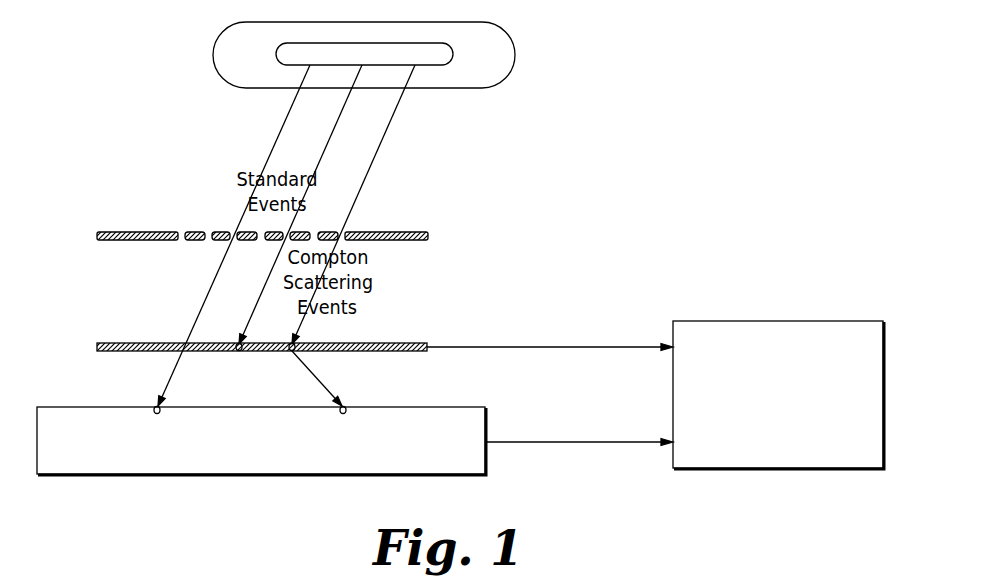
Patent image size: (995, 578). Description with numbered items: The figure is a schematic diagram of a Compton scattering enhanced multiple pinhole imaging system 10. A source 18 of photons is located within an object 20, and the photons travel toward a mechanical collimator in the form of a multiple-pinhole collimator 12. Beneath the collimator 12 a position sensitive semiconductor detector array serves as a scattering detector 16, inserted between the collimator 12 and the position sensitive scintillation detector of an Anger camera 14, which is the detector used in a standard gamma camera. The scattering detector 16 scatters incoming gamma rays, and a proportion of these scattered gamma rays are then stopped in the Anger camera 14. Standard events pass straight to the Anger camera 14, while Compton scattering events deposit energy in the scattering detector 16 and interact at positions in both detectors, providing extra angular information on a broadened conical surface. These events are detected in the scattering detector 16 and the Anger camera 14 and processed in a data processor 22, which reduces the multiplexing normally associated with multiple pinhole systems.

The system 10 is at (737, 150).
The multiple-pinhole collimator 12 is at (428, 235).
The Anger camera 14 is at (486, 458).
The scattering detector 16 is at (405, 342).
The source 18 is at (453, 54).
The object 20 is at (515, 53).
The data processor 22 is at (800, 321).